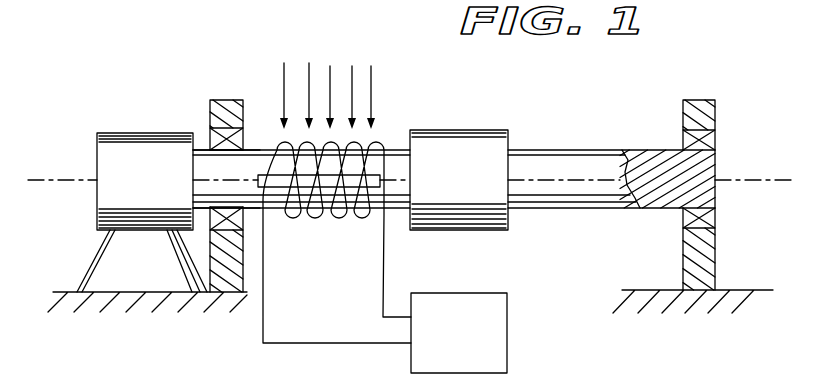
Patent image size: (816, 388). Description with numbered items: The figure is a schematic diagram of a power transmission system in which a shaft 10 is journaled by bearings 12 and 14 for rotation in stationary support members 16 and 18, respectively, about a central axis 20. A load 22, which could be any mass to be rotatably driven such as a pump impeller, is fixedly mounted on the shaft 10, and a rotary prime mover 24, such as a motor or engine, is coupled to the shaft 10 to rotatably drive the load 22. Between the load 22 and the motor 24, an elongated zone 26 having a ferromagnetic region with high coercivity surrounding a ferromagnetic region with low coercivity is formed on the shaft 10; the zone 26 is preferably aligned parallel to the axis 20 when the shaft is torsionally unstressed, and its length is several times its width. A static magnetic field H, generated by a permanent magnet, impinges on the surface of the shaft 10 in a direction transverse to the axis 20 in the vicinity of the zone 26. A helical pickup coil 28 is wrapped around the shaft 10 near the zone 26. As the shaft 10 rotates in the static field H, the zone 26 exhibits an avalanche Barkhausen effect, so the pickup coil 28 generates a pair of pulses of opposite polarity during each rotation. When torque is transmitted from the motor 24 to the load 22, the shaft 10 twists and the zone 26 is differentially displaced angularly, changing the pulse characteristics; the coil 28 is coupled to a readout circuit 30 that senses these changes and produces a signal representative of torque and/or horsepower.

The shaft 10 is at (560, 150).
The bearing 12 is at (207, 146).
The bearing 14 is at (716, 143).
The stationary support member 16 is at (228, 100).
The stationary support member 18 is at (697, 100).
The central axis 20 is at (792, 181).
The load 22 is at (458, 130).
The rotary prime mover 24 is at (97, 150).
The elongated zone 26 is at (377, 222).
The helical pickup coil 28 is at (293, 220).
The readout circuit 30 is at (447, 293).
The magnetic field H is at (330, 88).